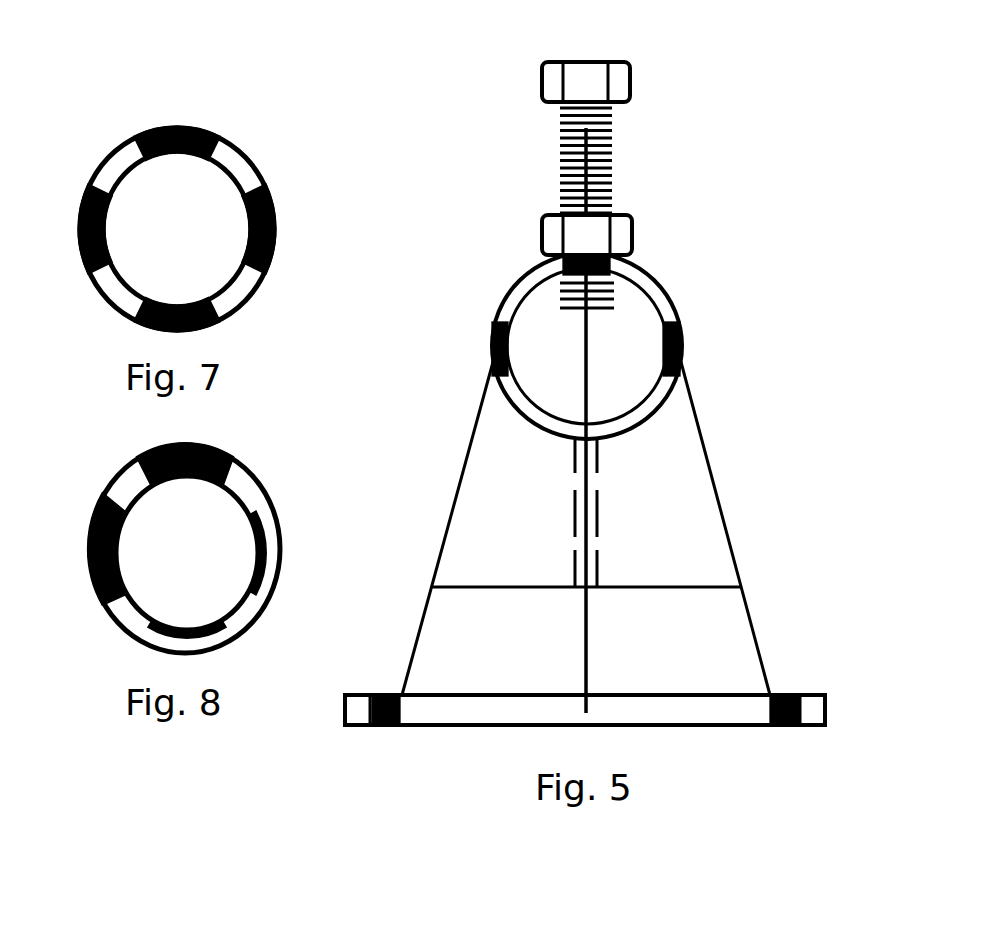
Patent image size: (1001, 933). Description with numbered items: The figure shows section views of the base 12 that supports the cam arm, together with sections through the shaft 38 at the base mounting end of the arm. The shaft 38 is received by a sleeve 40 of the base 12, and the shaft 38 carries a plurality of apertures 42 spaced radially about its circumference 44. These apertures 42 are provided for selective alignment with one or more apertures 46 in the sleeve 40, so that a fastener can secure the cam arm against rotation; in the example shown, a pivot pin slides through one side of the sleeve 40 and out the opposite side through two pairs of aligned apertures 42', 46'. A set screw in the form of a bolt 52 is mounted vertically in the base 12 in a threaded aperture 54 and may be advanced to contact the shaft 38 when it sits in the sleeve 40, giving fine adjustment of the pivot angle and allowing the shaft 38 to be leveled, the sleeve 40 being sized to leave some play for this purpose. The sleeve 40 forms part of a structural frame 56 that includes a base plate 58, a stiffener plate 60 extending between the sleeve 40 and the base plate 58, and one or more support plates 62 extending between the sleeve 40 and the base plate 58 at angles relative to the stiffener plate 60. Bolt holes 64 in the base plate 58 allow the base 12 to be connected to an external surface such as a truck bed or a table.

In FIG. 5, the base 12 is at (698, 288).
In FIG. 7, the shaft 38 is at (240, 152).
In FIG. 8, the shaft 38 is at (268, 493).
In FIG. 5, the sleeve 40 is at (648, 278).
In FIG. 7, the apertures 42 is at (177, 113).
In FIG. 7, the aligned apertures 42' is at (177, 229).
In FIG. 7, the circumference 44 is at (247, 298).
In FIG. 5, the apertures 46 is at (574, 316).
In FIG. 5, the aligned apertures 46' is at (602, 346).
In FIG. 5, the bolt 52 is at (632, 77).
In FIG. 5, the threaded aperture 54 is at (619, 287).
In FIG. 5, the structural frame 56 is at (736, 528).
In FIG. 5, the base plate 58 is at (812, 695).
In FIG. 5, the stiffener plate 60 is at (598, 531).
In FIG. 5, the support plates 62 is at (680, 517).
In FIG. 5, the bolt holes 64 is at (773, 695).